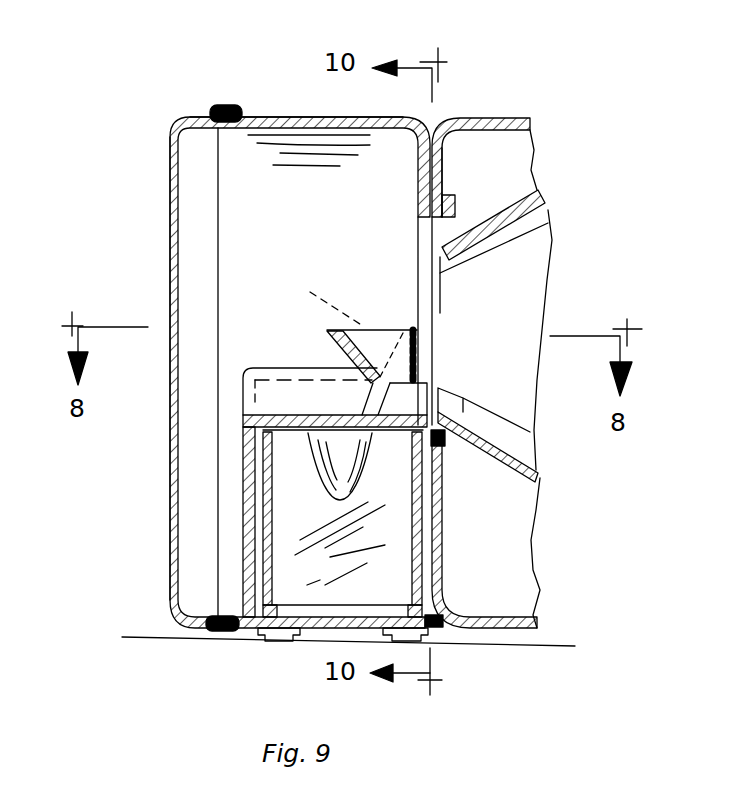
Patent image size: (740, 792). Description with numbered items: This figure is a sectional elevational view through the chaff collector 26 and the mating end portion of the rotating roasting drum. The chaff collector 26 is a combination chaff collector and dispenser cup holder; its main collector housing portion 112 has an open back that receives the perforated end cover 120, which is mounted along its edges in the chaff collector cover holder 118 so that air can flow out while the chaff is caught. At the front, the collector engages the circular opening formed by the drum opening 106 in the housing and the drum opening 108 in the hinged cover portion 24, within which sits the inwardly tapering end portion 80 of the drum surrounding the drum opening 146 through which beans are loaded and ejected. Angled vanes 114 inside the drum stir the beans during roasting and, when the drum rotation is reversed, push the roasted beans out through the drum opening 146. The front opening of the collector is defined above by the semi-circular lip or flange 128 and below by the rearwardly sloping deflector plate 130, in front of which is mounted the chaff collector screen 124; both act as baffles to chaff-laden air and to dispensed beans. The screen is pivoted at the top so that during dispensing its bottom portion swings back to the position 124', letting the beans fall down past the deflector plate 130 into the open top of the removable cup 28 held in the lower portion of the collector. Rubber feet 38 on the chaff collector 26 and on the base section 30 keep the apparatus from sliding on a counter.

The chaff collector 26 is at (275, 85).
The perforated end cover 120 is at (172, 127).
The main collector housing portion 112 is at (348, 117).
The chaff collector cover holder 118 is at (221, 104).
The cover portion 24 is at (502, 118).
The drum opening 108 is at (445, 164).
The semi-circular lip or flange 128 is at (456, 201).
The vanes 114 is at (528, 228).
The drum opening 106 is at (460, 451).
The drum opening 146 is at (440, 412).
The end portion of the roasting drum 80 is at (527, 483).
The base section 30 is at (518, 630).
The deflector plate 130 is at (337, 355).
The chaff collector screen 124 is at (372, 325).
The chaff collector screen bottom portion 124' is at (313, 297).
The removable cup 28 is at (325, 598).
The rubber feet 38 is at (278, 641).